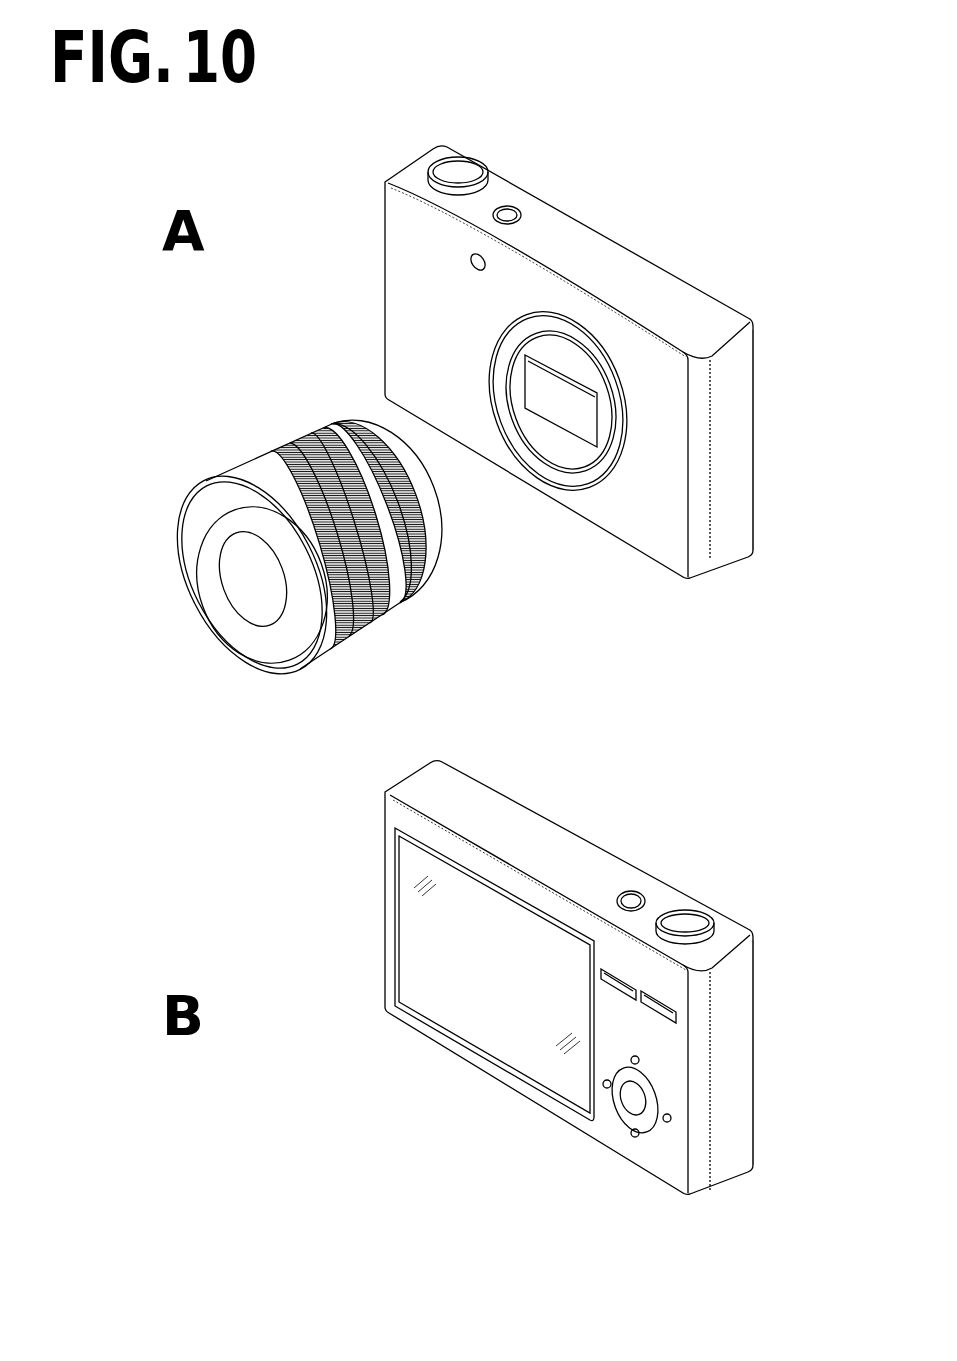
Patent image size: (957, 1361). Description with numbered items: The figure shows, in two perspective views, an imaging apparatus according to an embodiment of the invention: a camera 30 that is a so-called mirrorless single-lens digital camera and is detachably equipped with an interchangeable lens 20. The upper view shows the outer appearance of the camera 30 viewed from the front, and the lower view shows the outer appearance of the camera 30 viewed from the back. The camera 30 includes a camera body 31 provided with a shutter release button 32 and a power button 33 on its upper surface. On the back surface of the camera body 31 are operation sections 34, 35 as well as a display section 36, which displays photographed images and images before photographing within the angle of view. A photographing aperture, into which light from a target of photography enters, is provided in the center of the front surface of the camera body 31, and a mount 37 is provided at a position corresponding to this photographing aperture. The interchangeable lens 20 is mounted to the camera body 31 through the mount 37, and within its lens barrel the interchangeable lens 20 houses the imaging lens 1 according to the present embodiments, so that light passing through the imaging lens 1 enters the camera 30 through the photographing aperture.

The imaging lens 1 is at (257, 600).
The interchangeable lens 20 is at (237, 487).
The camera 30 is at (692, 217).
The camera body 31 is at (743, 413).
The shutter release button 32 is at (468, 163).
The power button 33 is at (507, 213).
The operation section 34 is at (680, 1022).
The operation section 35 is at (647, 1127).
The display section 36 is at (475, 1040).
The mount 37 is at (580, 473).